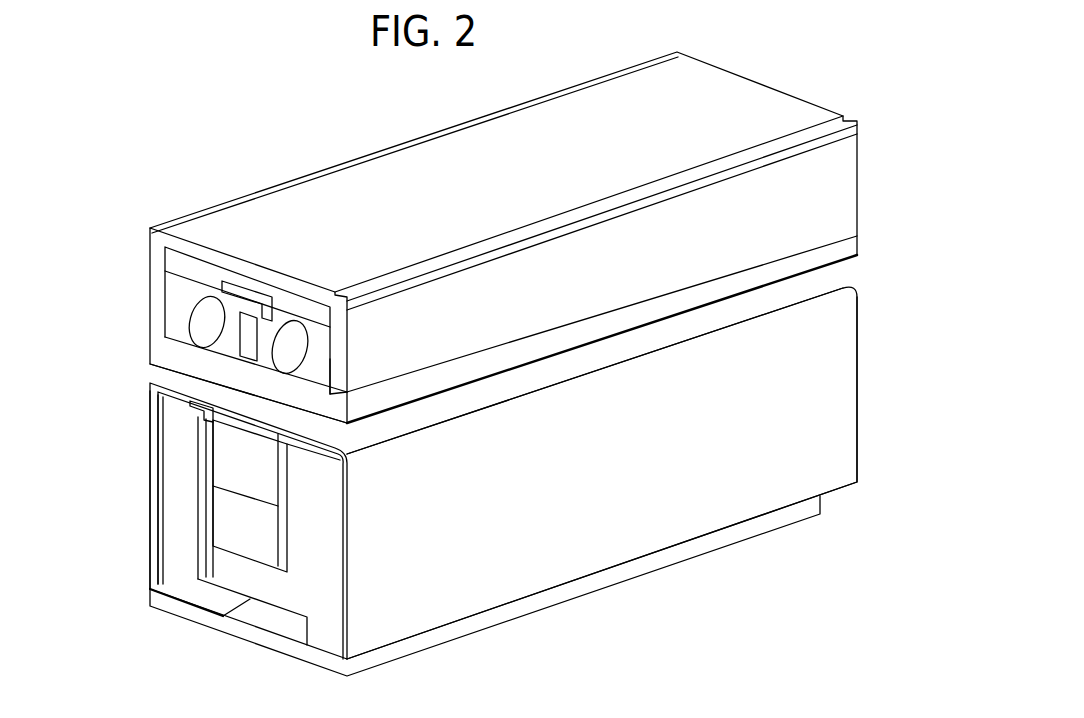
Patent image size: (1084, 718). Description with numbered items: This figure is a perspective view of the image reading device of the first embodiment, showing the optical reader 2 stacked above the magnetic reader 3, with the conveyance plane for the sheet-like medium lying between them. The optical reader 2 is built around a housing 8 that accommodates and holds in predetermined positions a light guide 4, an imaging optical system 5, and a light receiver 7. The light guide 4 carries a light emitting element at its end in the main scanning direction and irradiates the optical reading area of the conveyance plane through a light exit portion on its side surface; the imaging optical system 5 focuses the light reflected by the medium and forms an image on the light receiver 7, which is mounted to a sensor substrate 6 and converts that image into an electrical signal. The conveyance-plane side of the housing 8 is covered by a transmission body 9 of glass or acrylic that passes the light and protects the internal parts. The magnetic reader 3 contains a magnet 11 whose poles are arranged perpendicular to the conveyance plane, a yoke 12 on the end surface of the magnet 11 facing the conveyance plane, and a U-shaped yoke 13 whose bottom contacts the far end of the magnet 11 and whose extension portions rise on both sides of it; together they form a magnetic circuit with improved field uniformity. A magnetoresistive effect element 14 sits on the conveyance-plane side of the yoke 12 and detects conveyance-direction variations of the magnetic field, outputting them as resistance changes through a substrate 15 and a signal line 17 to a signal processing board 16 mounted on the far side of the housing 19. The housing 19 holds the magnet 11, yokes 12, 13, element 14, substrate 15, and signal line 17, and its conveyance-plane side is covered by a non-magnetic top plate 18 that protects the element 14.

The optical reader 2 is at (860, 184).
The magnetic reader 3 is at (858, 422).
The light guide 4 is at (195, 312).
The imaging optical system 5 is at (238, 315).
The sensor substrate 6 is at (447, 180).
The light receiver 7 is at (248, 300).
The housing 8 is at (663, 204).
The transmission body 9 is at (158, 347).
The magnet 11 is at (293, 447).
The yoke 12 is at (163, 442).
The yoke 13 is at (203, 523).
The magnetoresistive effect element 14 is at (330, 367).
The substrate 15 is at (193, 405).
The signal processing board 16 is at (268, 642).
The signal line 17 is at (167, 583).
The non-magnetic top plate 18 is at (823, 282).
The housing 19 is at (670, 382).